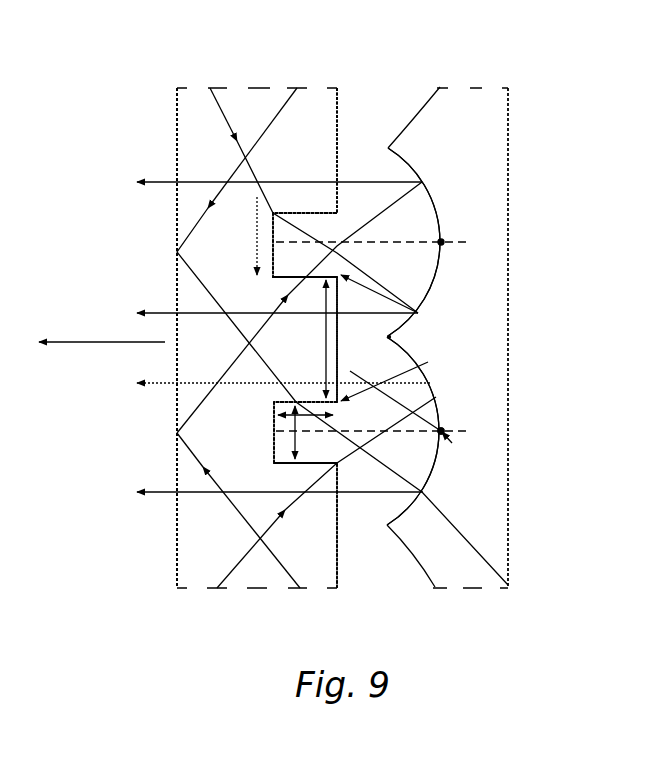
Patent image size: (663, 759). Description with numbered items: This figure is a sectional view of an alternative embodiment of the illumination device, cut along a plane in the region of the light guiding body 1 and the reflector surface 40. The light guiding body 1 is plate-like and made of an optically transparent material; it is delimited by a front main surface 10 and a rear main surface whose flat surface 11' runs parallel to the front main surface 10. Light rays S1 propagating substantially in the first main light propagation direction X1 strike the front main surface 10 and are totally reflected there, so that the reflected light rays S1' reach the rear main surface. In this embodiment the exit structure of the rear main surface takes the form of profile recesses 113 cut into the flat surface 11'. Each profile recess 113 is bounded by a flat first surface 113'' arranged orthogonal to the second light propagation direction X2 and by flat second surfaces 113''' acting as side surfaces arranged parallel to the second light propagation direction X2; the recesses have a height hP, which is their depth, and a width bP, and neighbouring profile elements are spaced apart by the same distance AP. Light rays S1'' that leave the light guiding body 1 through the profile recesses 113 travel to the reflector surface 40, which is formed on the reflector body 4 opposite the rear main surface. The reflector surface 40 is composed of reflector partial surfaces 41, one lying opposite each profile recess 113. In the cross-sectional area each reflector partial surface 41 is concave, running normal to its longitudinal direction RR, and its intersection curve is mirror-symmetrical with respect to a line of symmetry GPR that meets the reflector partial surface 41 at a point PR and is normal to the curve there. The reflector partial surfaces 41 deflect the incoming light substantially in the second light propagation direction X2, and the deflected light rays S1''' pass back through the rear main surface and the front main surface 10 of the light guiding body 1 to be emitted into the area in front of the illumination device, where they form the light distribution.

The light guiding body 1 is at (337, 98).
The flat surface 11' is at (389, 338).
The front main surface 10 is at (175, 462).
The reflector body 4 is at (488, 110).
The reflector surface 40 is at (395, 143).
The reflector partial surface 41 is at (440, 224).
The profile recess 113 is at (501, 336).
The flat first surface 113'' is at (339, 338).
The flat second surface 113''' is at (346, 345).
The distance AP is at (391, 337).
The light ray S1 is at (242, 200).
The totally reflected light ray S1' is at (264, 336).
The emerging light ray S1'' is at (351, 385).
The deflected light ray S1''' is at (317, 495).
The first main light propagation direction X1 is at (257, 232).
The second light propagation direction X2 is at (91, 361).
The height hP is at (300, 418).
The width bP is at (295, 447).
The point PR is at (441, 431).
The longitudinal direction RR is at (441, 431).
The line of symmetry GPR is at (445, 435).